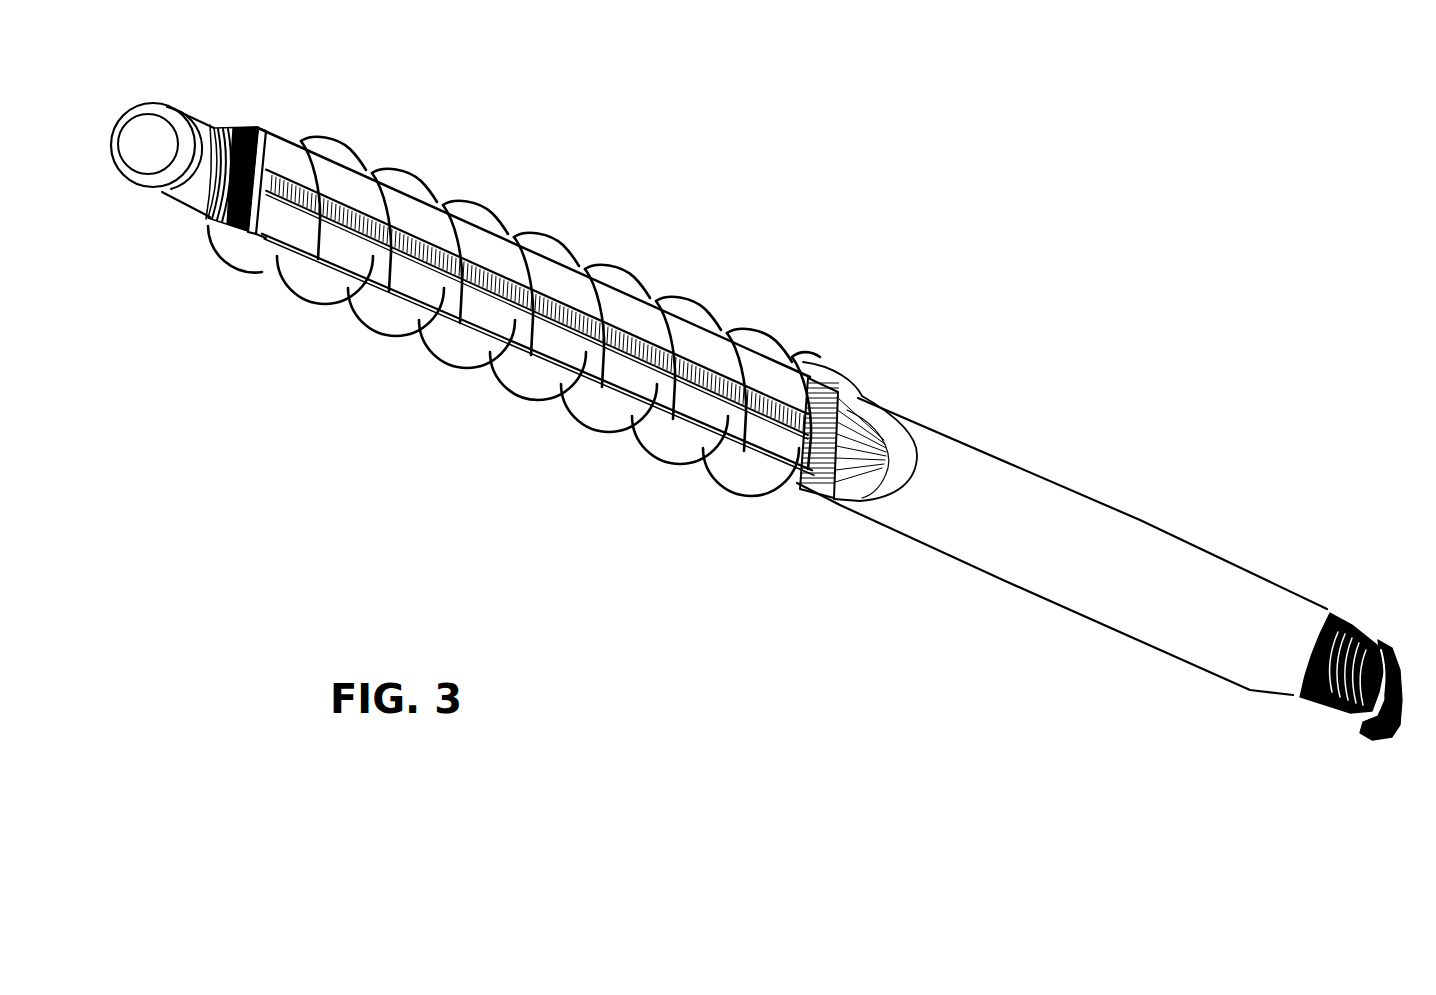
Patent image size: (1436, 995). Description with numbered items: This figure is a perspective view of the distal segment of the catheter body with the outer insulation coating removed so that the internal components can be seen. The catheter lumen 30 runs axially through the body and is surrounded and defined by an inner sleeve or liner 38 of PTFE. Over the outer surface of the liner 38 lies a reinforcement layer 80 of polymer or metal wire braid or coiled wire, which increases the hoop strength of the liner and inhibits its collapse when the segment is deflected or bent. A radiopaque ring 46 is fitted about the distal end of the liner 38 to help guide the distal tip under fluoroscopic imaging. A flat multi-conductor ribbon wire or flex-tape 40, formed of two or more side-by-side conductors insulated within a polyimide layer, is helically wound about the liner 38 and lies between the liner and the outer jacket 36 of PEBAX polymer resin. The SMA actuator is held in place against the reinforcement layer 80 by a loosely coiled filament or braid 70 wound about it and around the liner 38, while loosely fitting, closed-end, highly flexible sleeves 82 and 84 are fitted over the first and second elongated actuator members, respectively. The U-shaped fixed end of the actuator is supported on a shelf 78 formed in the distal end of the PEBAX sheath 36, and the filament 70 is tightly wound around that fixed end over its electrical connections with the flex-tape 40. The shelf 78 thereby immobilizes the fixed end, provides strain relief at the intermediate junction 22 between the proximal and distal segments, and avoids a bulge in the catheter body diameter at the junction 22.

The intermediate junction 22 is at (907, 373).
The catheter lumen 30 is at (147, 150).
The outer jacket 36 is at (1063, 506).
The inner liner 38 is at (170, 176).
The flex-tape 40 is at (1337, 743).
The radiopaque ring 46 is at (208, 128).
The coiled filament 70 is at (393, 320).
The shelf 78 is at (810, 488).
The reinforcement layer 80 is at (238, 133).
The first flexible sleeve 82 is at (305, 237).
The second flexible sleeve 84 is at (280, 153).